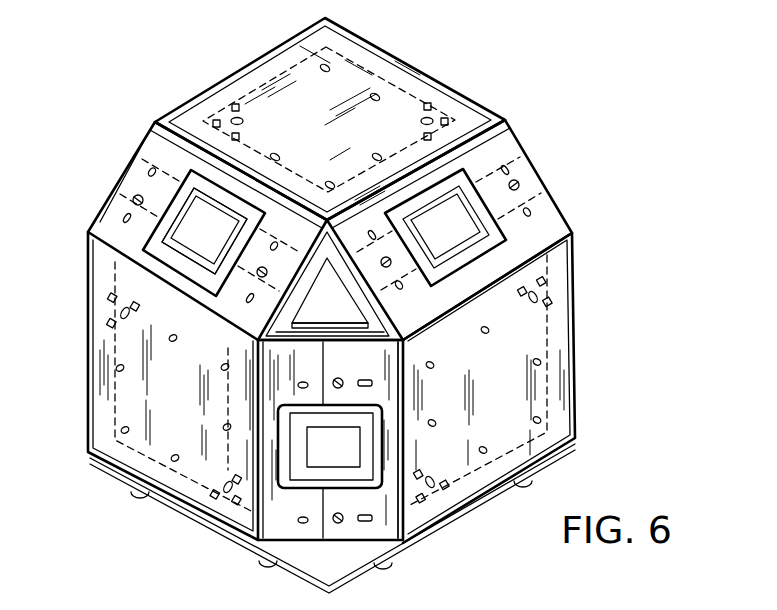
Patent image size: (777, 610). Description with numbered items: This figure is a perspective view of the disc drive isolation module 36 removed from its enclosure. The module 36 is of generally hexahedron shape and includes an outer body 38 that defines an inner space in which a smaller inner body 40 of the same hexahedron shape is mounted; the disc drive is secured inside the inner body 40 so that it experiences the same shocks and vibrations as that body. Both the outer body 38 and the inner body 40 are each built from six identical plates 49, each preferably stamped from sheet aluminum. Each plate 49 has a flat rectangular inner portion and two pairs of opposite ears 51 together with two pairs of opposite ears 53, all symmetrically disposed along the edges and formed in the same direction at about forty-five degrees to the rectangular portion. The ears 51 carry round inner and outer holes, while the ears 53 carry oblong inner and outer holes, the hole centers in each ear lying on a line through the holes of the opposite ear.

The disc drive isolation module 36 is at (438, 63).
The outer body 38 is at (148, 140).
The inner body 40 is at (175, 221).
The plate 49 is at (273, 72).
The ears 51 is at (140, 150).
The ears 53 is at (118, 188).